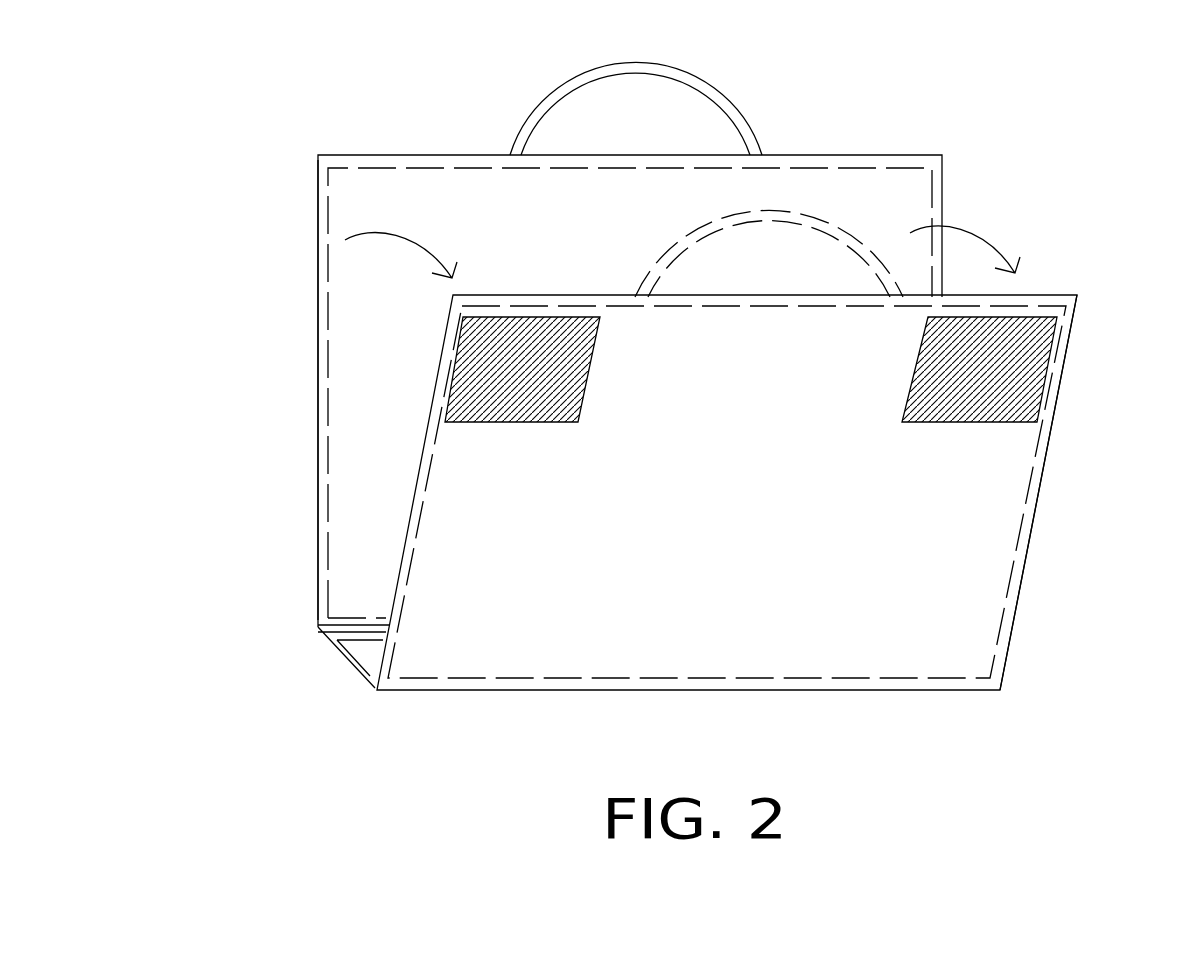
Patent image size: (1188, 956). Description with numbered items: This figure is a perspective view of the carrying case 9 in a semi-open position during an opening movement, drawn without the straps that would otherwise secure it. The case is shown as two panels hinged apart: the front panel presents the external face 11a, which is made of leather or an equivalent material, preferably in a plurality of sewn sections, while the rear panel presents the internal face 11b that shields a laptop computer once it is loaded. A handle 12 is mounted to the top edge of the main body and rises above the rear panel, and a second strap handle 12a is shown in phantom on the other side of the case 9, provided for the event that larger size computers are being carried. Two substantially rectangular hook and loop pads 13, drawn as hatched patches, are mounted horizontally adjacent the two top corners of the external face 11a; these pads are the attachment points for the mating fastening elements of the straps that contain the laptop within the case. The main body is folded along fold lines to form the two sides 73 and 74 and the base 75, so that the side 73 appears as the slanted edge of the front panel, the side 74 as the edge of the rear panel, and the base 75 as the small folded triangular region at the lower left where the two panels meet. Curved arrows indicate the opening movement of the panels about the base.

The carrying case 9 is at (677, 395).
The external face 11a is at (965, 638).
The internal face 11b is at (363, 445).
The handle 12 is at (720, 94).
The second strap handle 12a is at (855, 235).
The hook and loop pads 13 is at (568, 413).
The side 73 is at (1025, 562).
The side 74 is at (317, 278).
The base 75 is at (368, 649).